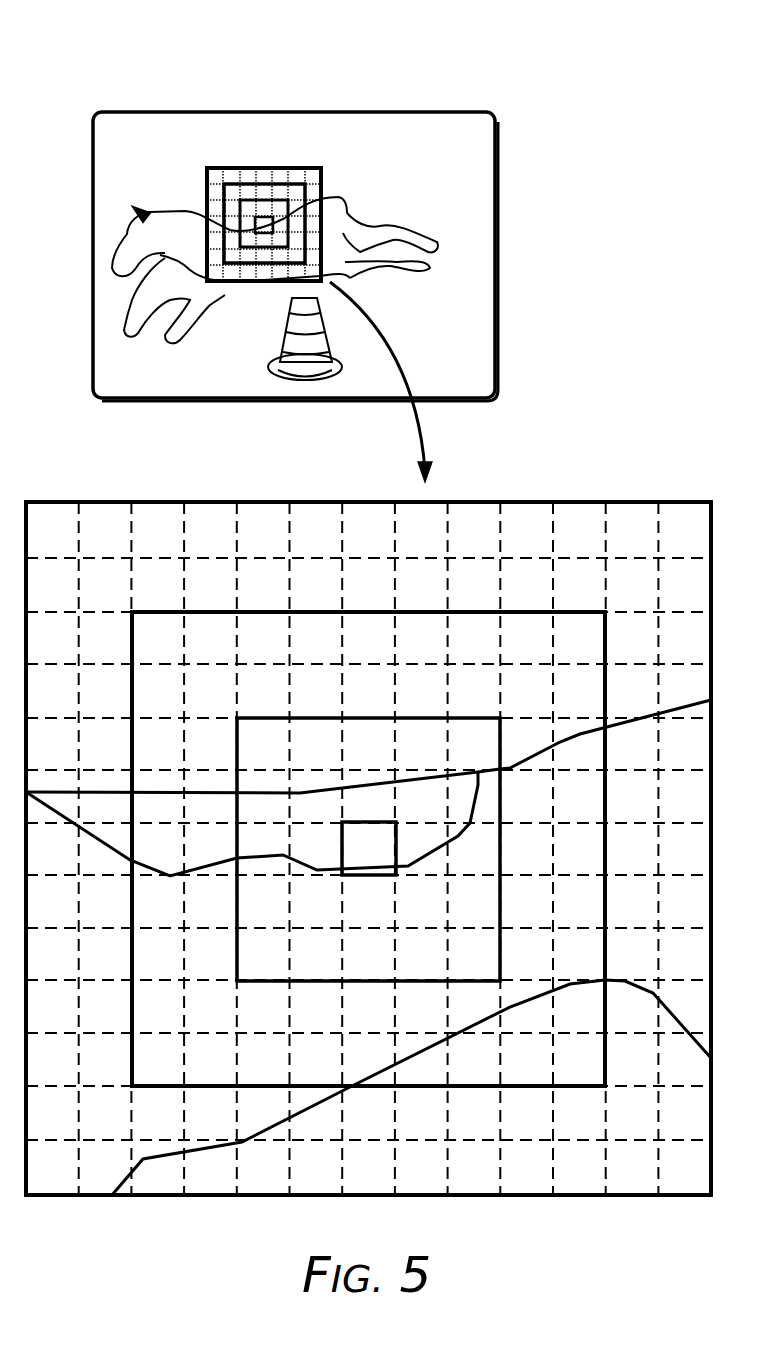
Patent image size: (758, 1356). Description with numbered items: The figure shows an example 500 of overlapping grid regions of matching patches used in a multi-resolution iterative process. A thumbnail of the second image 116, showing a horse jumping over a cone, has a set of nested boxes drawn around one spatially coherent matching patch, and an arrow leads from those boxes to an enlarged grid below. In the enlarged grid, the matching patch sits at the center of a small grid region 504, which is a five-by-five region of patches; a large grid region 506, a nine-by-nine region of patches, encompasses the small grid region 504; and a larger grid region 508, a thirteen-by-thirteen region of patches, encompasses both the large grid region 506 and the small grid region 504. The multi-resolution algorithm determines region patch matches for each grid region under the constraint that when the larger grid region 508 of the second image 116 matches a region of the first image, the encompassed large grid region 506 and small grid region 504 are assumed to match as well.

The second image 116 is at (391, 247).
The example 500 is at (391, 247).
The small grid region 504 is at (500, 742).
The large grid region 506 is at (515, 612).
The larger grid region 508 is at (520, 502).